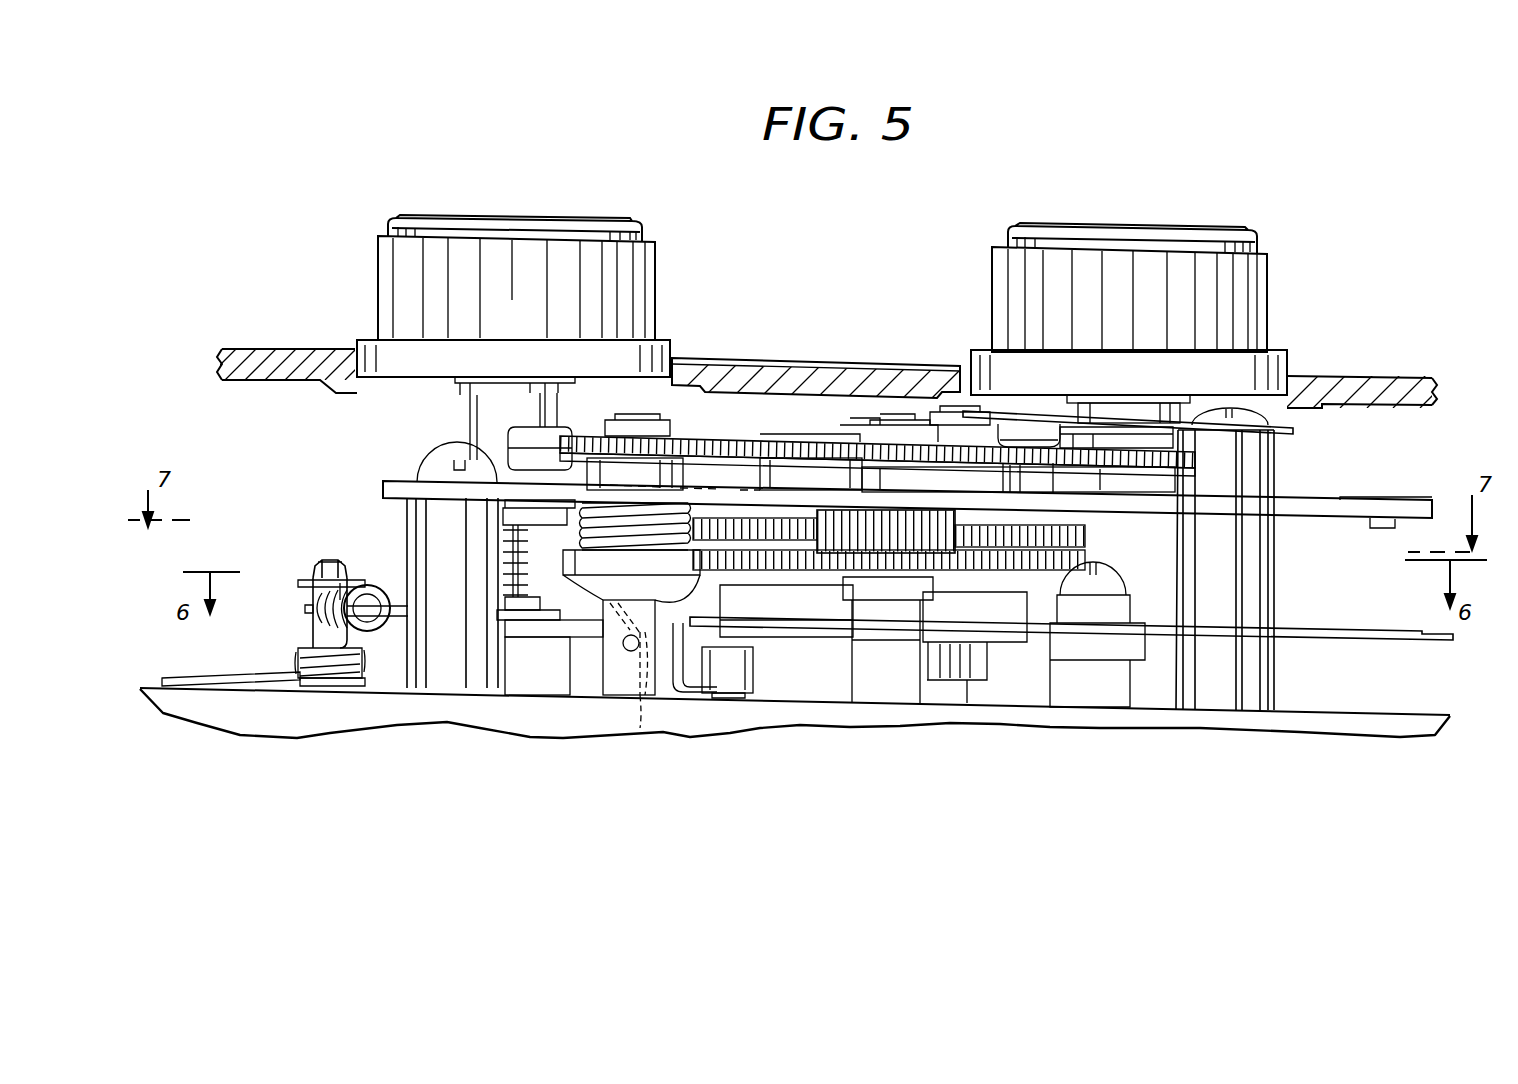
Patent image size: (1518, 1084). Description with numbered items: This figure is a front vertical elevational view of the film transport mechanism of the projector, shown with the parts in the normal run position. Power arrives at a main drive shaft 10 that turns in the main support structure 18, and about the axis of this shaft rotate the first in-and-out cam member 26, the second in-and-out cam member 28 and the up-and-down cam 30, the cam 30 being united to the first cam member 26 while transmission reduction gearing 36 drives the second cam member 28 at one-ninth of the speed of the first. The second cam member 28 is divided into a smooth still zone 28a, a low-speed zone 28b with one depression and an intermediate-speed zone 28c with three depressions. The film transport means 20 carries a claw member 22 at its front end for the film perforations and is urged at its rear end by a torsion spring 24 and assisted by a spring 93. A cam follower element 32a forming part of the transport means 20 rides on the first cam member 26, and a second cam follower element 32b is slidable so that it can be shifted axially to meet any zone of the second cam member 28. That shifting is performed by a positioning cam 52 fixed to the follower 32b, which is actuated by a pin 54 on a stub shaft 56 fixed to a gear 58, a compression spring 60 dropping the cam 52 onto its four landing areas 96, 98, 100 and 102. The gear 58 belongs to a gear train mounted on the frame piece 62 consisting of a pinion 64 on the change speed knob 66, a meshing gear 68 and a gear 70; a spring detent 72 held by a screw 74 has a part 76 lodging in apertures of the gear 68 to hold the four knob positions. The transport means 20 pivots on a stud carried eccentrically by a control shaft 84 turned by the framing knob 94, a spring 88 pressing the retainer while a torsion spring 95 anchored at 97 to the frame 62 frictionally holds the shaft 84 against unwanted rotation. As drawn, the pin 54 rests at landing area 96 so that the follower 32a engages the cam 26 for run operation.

The main drive shaft 10 is at (860, 405).
The main support structure 18 is at (1360, 712).
The film transport means 20 is at (1285, 630).
The claw member 22 is at (1437, 642).
The torsion spring 24 is at (300, 662).
The first rotatable in-and-out cam member 26 is at (786, 658).
The second rotatable in-and-out cam member 28 is at (1015, 525).
The still cam zone 28a is at (740, 515).
The low fraction speed zone 28b is at (648, 495).
The intermediate fraction speed zone 28c is at (745, 478).
The up-and-down cam 30 is at (1010, 640).
The cam follower element 32a is at (728, 690).
The second cam follower element 32b is at (517, 575).
The transmission reduction gearing 36 is at (992, 556).
The positioning cam 52 is at (565, 572).
The pin 54 is at (626, 693).
The stub shaft 56 is at (612, 677).
The gear 58 is at (700, 437).
The compression spring 60 is at (505, 560).
The frame piece 62 is at (392, 490).
The pinion 64 is at (1165, 490).
The change speed knob 66 is at (1258, 275).
The meshing gear 68 is at (980, 455).
The gear 70 is at (748, 437).
The spring detent 72 is at (1125, 412).
The screw 74 is at (1290, 420).
The detent part 76 is at (1020, 432).
The control shaft 84 is at (495, 412).
The spring 88 is at (540, 600).
The spring 93 is at (355, 582).
The framing knob 94 is at (633, 298).
The torsion spring 95 is at (512, 460).
The landing area 96 is at (640, 660).
The anchor 97 is at (515, 432).
The landing area 98 is at (700, 608).
The landing area 100 is at (610, 655).
The landing area 102 is at (578, 615).